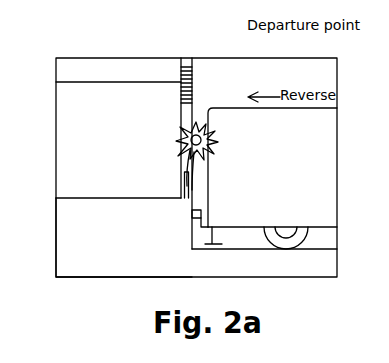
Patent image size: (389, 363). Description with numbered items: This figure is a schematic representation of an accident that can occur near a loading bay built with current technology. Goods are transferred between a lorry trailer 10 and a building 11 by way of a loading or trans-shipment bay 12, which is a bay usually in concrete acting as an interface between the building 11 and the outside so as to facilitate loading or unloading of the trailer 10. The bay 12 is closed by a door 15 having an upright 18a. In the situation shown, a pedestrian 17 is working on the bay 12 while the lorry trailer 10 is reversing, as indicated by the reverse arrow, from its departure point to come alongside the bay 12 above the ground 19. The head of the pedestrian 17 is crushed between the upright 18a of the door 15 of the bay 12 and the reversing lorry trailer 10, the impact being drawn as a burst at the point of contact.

The lorry trailer 10 is at (302, 137).
The building 11 is at (124, 118).
The loading or trans-shipment bay 12 is at (107, 226).
The door 15 is at (192, 82).
The pedestrian 17 is at (186, 166).
The upright 18a is at (180, 115).
The ground 19 is at (307, 265).